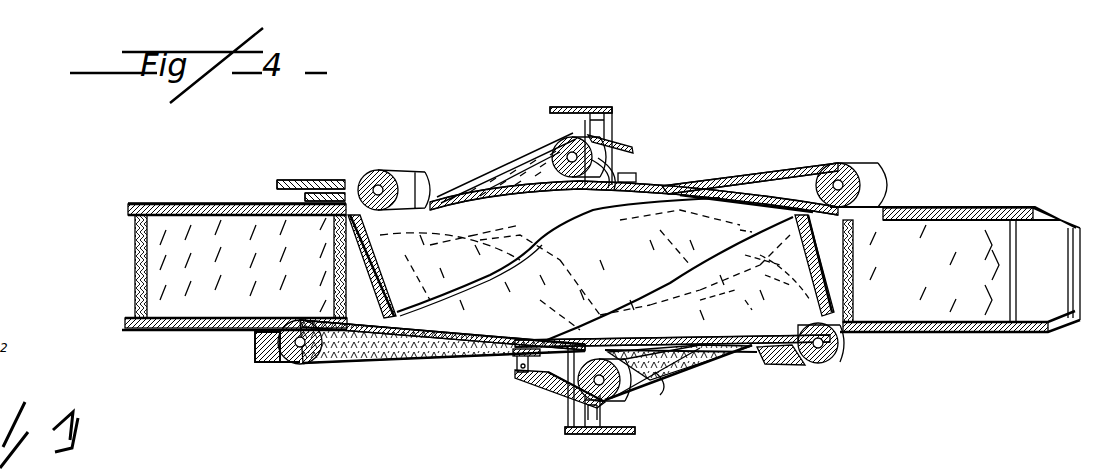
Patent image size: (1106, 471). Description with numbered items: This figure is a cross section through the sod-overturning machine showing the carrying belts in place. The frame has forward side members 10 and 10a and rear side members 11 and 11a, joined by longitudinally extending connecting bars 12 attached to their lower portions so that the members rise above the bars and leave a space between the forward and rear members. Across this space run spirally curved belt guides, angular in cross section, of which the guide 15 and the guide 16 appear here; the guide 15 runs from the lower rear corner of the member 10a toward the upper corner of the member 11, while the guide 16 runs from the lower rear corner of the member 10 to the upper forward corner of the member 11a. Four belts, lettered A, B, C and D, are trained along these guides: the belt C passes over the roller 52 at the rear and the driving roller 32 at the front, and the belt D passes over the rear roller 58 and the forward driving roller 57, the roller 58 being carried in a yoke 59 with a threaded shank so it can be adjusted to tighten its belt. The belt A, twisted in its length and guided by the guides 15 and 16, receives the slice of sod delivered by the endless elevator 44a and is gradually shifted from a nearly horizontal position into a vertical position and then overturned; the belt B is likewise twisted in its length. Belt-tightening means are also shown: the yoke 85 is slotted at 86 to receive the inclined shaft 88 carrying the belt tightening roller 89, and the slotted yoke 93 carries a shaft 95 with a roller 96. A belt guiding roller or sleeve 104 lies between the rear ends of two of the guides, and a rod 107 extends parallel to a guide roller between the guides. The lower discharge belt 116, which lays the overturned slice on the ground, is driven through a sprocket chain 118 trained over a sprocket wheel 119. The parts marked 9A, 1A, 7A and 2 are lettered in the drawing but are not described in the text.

The rear side member 11a is at (128, 210).
The connecting bars 12 is at (180, 207).
The rear side member 11 is at (125, 323).
The lower belt 116 is at (150, 277).
The sprocket chain 118 is at (283, 182).
The sprocket wheel 119 is at (310, 199).
The roller 52 is at (365, 183).
The belt C is at (423, 195).
The belt B is at (500, 183).
The shaft 95 is at (560, 150).
The yoke 93 is at (590, 105).
The bracket 9A is at (612, 127).
The roller 96 is at (620, 170).
The upper conveyor band 1A is at (700, 190).
The belt D is at (812, 165).
The roller 57 is at (839, 180).
The forward side member 10a is at (967, 218).
The forward side member 10 is at (1030, 332).
The endless elevator 44a is at (963, 300).
The end member 2 is at (1063, 283).
The belt A is at (812, 230).
The belt guide 15 is at (496, 392).
The rod 107 is at (755, 270).
The yoke 59 is at (258, 353).
The roller 58 is at (297, 364).
The belt guiding roller 104 is at (512, 353).
The shaft 88 is at (577, 392).
The slots 86 is at (588, 416).
The yoke 85 is at (610, 432).
The belt tightening roller 89 is at (628, 405).
The belt guide 16 is at (733, 353).
The roller 32 is at (821, 365).
The roller housing 7A is at (835, 345).